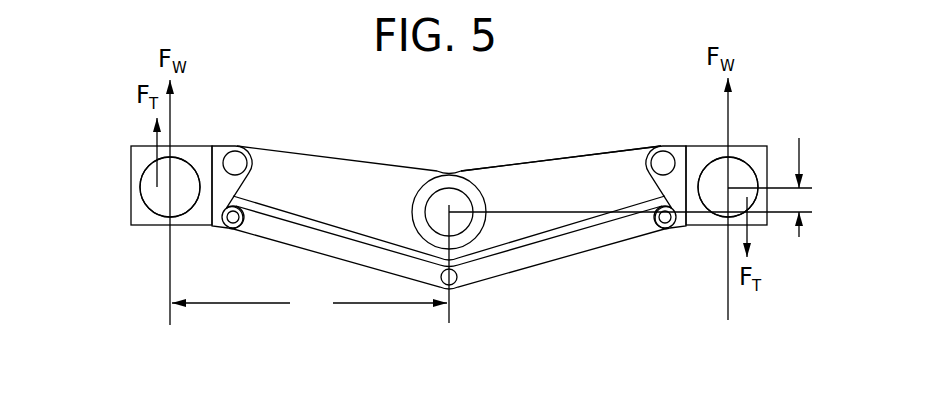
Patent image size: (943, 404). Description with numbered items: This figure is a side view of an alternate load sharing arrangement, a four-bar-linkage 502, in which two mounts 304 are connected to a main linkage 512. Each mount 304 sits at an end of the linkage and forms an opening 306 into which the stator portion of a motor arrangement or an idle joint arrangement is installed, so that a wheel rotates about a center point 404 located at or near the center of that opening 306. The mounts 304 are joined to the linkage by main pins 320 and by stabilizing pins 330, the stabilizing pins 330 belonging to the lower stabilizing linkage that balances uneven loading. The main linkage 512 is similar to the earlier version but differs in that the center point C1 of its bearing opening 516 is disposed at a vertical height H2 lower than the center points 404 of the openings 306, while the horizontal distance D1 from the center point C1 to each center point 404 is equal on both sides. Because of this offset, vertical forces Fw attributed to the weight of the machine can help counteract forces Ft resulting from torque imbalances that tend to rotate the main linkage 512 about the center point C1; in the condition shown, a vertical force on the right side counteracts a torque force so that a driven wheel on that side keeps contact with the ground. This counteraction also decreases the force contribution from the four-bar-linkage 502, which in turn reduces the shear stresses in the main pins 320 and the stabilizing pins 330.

The mount 304 is at (140, 217).
The opening 306 is at (180, 203).
The main pin 320 is at (236, 162).
The stabilizing pin 330 is at (234, 226).
The center point 404 is at (156, 188).
The four-bar-linkage 502 is at (591, 86).
The main linkage 512 is at (503, 196).
The bearing opening 516 is at (413, 211).
The center point C1 is at (458, 195).
The horizontal distance D1 is at (309, 305).
The height H2 is at (774, 215).